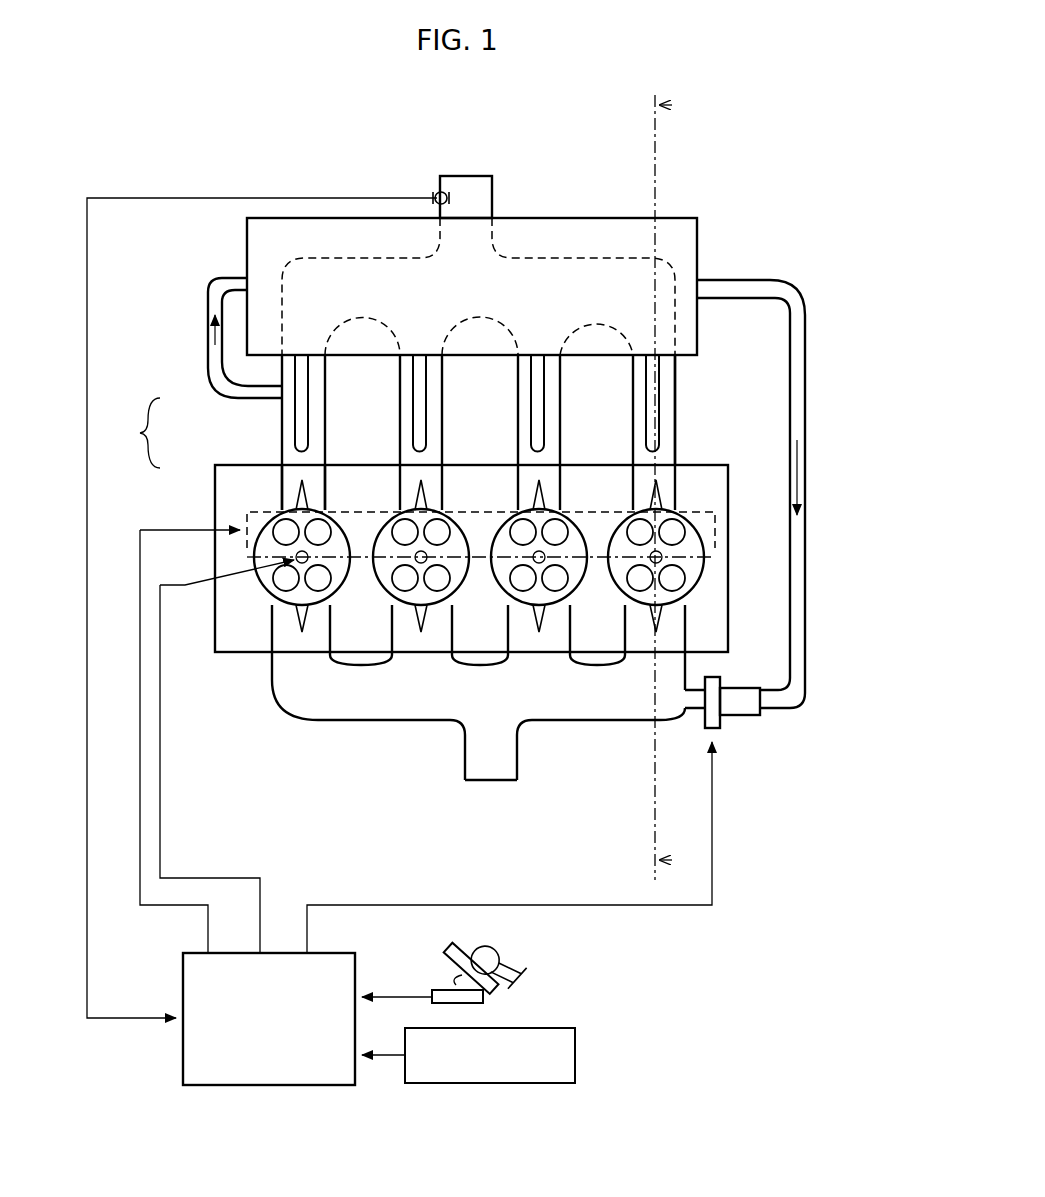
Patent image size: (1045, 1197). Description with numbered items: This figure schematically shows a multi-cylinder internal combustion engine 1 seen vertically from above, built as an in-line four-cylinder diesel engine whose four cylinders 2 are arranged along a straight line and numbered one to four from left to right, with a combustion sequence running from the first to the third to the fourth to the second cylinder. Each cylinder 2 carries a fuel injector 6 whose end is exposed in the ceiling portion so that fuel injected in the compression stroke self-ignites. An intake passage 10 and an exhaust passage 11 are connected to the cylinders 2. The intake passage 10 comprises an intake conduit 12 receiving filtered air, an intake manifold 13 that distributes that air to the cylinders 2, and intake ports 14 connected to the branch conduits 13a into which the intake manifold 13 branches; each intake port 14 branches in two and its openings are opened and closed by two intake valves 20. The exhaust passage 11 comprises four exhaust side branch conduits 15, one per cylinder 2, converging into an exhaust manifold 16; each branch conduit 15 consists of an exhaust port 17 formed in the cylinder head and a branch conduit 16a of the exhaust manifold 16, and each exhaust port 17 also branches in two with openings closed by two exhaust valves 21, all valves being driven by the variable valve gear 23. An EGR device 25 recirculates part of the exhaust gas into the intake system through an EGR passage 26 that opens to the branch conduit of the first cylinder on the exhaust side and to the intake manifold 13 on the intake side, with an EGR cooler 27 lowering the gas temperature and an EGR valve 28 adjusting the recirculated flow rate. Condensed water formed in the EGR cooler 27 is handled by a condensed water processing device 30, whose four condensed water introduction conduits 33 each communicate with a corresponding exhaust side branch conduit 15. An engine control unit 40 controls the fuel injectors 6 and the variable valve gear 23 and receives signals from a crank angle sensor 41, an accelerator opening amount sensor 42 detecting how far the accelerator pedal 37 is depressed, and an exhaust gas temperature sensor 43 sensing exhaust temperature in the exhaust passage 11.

The multi-cylinder internal combustion engine 1 is at (762, 138).
The cylinder 2 is at (392, 598).
The fuel injector 6 is at (268, 590).
The intake passage 10 is at (294, 712).
The exhaust passage 11 is at (545, 250).
The intake conduit 12 is at (465, 756).
The intake manifold 13 is at (358, 712).
The branch conduit 13a is at (278, 657).
The intake port 14 is at (270, 626).
The exhaust side branch conduit 15 is at (129, 433).
The exhaust manifold 16 is at (290, 282).
The branch conduit of the exhaust manifold 16a is at (282, 414).
The exhaust port 17 is at (285, 478).
The intake valve 20 is at (437, 582).
The exhaust valve 21 is at (316, 540).
The variable valve gear 23 is at (247, 516).
The EGR device 25 is at (820, 264).
The EGR passage 26 is at (210, 290).
The EGR cooler 27 is at (697, 232).
The EGR valve 28 is at (740, 718).
The condensed water processing device 30 is at (675, 372).
The condensed water introduction conduit 33 is at (305, 400).
The accelerator pedal 37 is at (445, 952).
The engine control unit (ECU) 40 is at (183, 966).
The crank angle sensor 41 is at (575, 1055).
The accelerator opening amount sensor 42 is at (483, 999).
The exhaust gas temperature sensor 43 is at (432, 195).